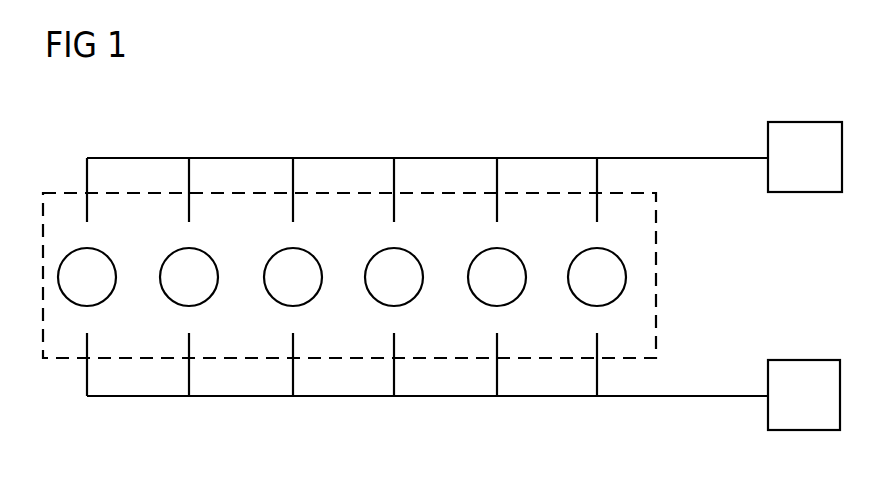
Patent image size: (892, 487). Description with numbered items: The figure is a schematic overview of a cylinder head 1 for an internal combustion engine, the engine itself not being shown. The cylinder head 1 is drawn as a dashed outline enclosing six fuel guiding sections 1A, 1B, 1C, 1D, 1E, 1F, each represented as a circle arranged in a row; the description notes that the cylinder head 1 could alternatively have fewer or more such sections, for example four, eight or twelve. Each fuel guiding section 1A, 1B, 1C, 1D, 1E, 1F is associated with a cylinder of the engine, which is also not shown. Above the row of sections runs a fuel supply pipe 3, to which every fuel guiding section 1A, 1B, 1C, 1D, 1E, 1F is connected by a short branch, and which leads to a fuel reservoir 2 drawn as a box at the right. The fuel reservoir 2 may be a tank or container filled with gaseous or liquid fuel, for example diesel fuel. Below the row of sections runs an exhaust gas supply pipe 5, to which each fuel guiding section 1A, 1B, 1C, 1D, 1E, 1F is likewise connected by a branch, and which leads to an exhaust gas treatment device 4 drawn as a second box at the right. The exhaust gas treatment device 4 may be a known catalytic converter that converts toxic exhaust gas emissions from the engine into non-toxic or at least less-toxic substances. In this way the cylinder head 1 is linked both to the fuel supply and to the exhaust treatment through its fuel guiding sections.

The cylinder head 1 is at (67, 193).
The fuel guiding section 1A is at (98, 249).
The fuel guiding section 1B is at (200, 249).
The fuel guiding section 1C is at (304, 249).
The fuel guiding section 1D is at (405, 249).
The fuel guiding section 1E is at (508, 249).
The fuel guiding section 1F is at (608, 249).
The fuel reservoir 2 is at (768, 133).
The fuel supply pipe 3 is at (342, 157).
The exhaust gas treatment device 4 is at (768, 373).
The exhaust gas supply pipe 5 is at (338, 396).